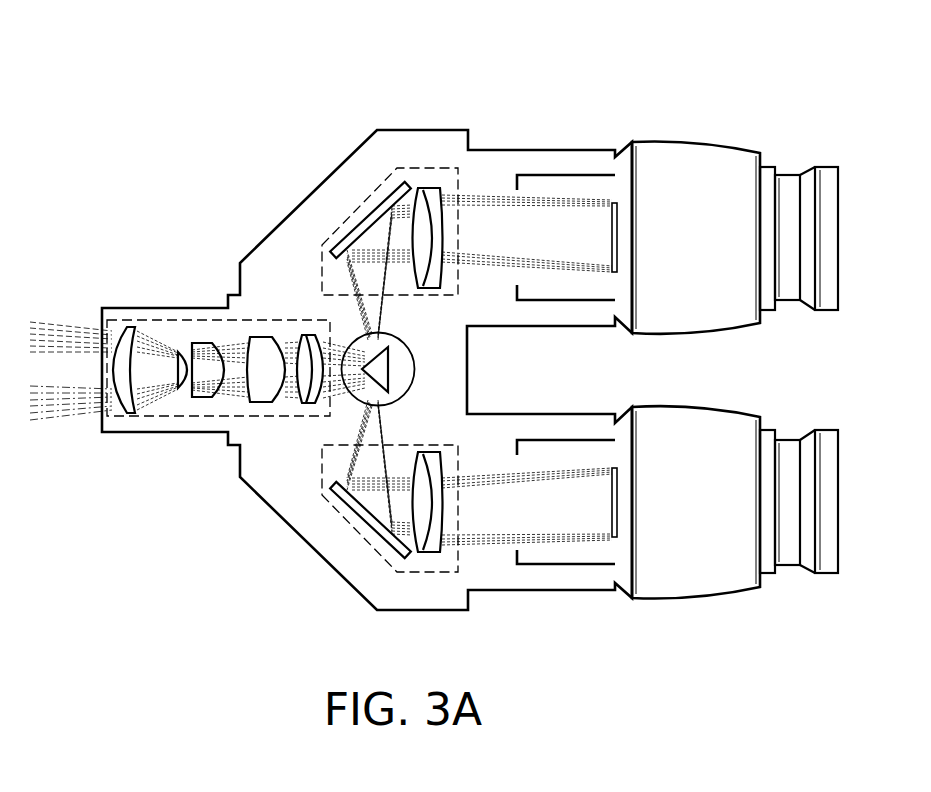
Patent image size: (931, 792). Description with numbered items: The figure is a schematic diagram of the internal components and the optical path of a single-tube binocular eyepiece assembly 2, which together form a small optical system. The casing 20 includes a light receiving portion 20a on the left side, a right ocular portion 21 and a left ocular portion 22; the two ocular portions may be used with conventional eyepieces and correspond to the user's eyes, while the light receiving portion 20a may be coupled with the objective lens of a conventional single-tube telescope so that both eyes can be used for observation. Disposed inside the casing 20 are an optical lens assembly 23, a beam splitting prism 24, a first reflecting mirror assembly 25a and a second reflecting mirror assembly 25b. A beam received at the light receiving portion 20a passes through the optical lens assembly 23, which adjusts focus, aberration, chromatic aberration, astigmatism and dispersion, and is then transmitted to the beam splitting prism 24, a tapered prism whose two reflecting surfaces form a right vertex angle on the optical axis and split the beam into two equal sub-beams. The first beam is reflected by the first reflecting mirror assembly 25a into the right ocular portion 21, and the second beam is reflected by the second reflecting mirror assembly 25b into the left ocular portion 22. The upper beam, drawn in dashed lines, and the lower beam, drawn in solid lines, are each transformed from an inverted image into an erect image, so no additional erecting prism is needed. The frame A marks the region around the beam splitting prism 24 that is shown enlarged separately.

The single-tube binocular eyepiece assembly 2 is at (87, 40).
The casing 20 is at (437, 128).
The light receiving portion 20a is at (96, 362).
The right ocular portion 21 is at (545, 148).
The left ocular portion 22 is at (548, 593).
The optical lens assembly 23 is at (163, 318).
The beam splitting prism 24 is at (390, 355).
The first reflecting mirror assembly 25a is at (365, 202).
The second reflecting mirror assembly 25b is at (370, 545).
The frame A is at (407, 390).